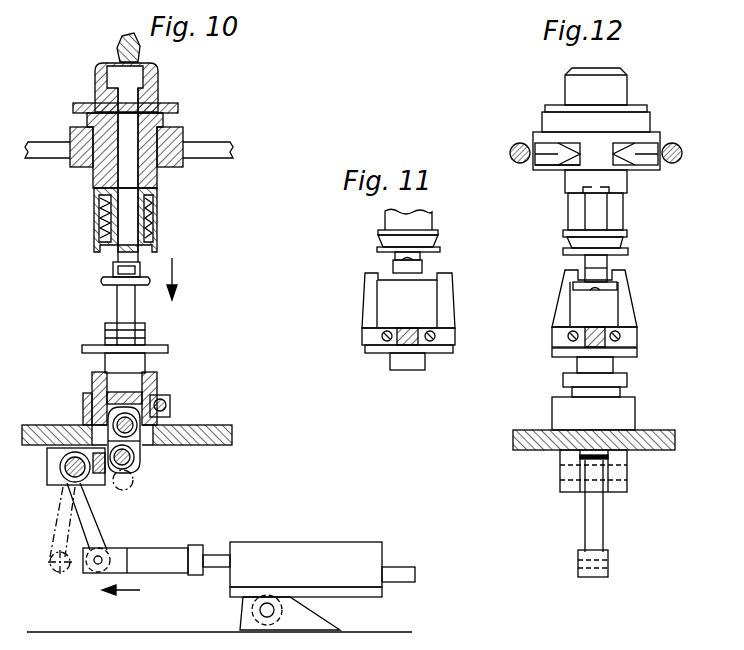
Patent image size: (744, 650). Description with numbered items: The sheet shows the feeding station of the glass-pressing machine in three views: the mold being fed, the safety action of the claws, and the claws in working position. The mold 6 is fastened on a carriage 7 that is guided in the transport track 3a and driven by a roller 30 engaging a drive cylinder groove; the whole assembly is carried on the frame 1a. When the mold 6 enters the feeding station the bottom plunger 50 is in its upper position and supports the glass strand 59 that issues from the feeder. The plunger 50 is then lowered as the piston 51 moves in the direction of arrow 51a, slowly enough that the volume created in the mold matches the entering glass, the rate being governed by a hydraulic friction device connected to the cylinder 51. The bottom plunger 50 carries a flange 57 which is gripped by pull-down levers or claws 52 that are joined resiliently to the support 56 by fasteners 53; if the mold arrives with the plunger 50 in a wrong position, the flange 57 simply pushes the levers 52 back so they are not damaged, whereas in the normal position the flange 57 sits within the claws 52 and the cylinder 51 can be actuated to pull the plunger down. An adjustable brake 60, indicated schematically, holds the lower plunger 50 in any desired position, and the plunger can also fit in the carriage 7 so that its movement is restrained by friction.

In FIG. 10, the frame 1a is at (212, 425).
In FIG. 12, the frame 1a is at (666, 430).
In FIG. 10, the transport track 3a is at (222, 142).
In FIG. 12, the transport track 3a is at (512, 150).
In FIG. 10, the mold 6 is at (158, 82).
In FIG. 12, the mold 6 is at (620, 90).
In FIG. 10, the carriage 7 is at (178, 118).
In FIG. 12, the carriage 7 is at (645, 125).
In FIG. 12, the roller 30 is at (536, 166).
In FIG. 10, the bottom plunger 50 is at (128, 165).
In FIG. 11, the bottom plunger 50 is at (412, 266).
In FIG. 12, the bottom plunger 50 is at (607, 262).
In FIG. 10, the piston 51 is at (320, 560).
In FIG. 10, the arrow 51a is at (125, 592).
In FIG. 10, the lever 52 is at (117, 300).
In FIG. 11, the lever 52 is at (443, 310).
In FIG. 12, the lever 52 is at (636, 312).
In FIG. 11, the screws 53 is at (447, 347).
In FIG. 10, the support 56 is at (147, 340).
In FIG. 11, the support 56 is at (406, 360).
In FIG. 10, the flange 57 is at (103, 281).
In FIG. 11, the flange 57 is at (393, 272).
In FIG. 12, the flange 57 is at (580, 287).
In FIG. 10, the glass strand 59 is at (118, 50).
In FIG. 10, the adjustable brake 60 is at (94, 212).